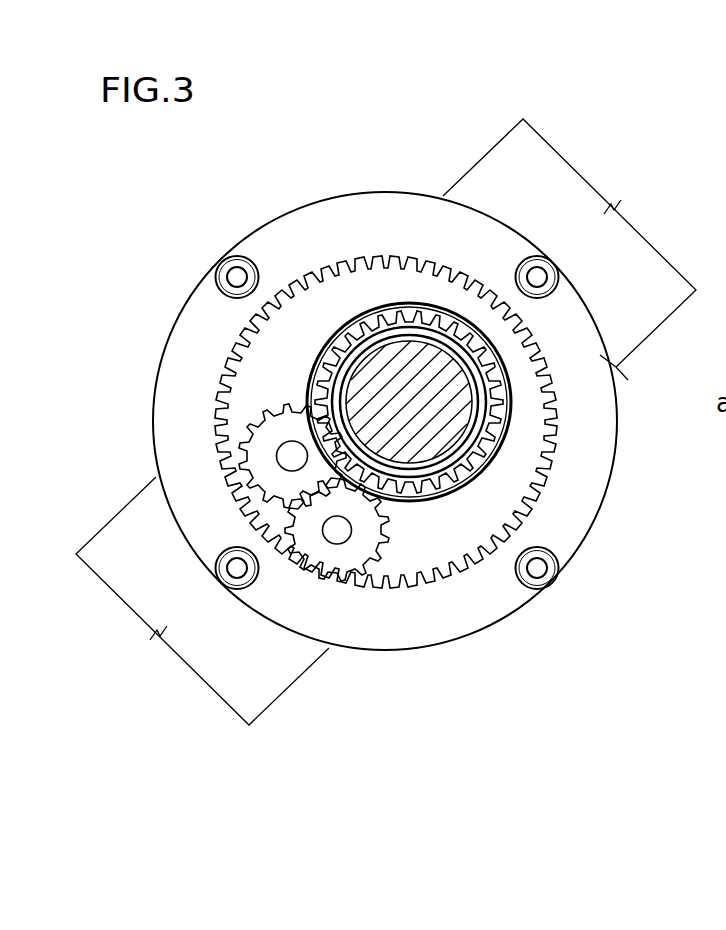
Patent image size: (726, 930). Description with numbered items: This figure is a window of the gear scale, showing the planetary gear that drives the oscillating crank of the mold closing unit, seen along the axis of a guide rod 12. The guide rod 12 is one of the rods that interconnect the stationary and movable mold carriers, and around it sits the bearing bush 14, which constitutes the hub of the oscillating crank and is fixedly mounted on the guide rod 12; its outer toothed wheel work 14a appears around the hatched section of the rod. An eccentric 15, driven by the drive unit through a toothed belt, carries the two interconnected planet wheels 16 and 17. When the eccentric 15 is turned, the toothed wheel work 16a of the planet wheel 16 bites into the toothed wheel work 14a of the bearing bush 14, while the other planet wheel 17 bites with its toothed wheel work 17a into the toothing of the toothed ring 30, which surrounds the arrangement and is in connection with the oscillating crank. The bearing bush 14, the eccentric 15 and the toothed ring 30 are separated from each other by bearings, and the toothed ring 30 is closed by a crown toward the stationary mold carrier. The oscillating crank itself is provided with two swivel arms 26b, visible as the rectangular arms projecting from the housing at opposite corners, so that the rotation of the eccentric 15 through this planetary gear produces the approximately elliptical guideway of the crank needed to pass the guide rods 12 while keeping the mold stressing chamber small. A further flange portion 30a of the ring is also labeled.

The guide rod 12 is at (237, 295).
The bearing bush 14 is at (322, 353).
The toothed wheel work of the bearing bush 14a is at (372, 385).
The eccentric 15 is at (468, 533).
The planet wheel 16 is at (263, 457).
The toothed wheel work of the planet wheel 16a is at (267, 418).
The planet wheel 17 is at (355, 550).
The toothed wheel work of the planet wheel 17a is at (415, 577).
The swivel arm 26b is at (540, 180).
The toothed ring 30 is at (565, 520).
The housing flange portion 30a is at (613, 365).